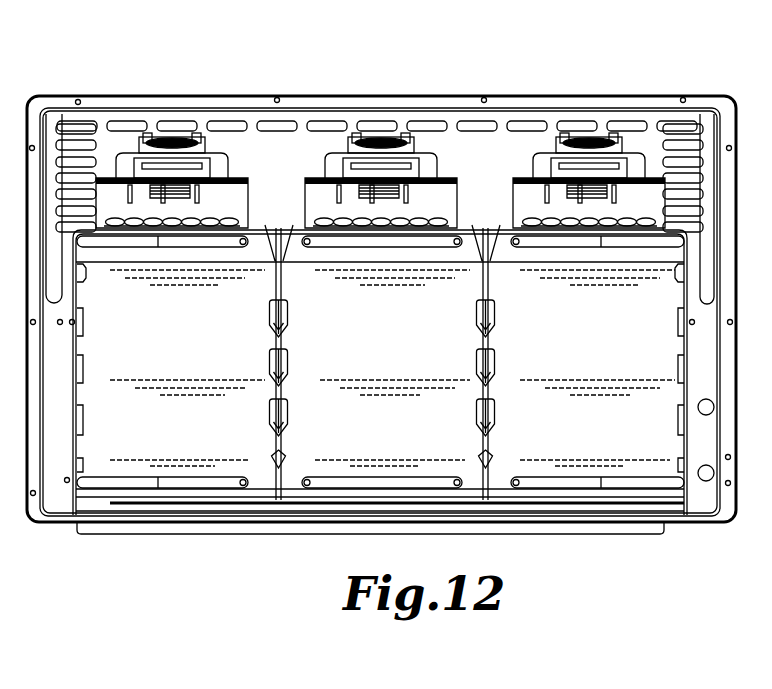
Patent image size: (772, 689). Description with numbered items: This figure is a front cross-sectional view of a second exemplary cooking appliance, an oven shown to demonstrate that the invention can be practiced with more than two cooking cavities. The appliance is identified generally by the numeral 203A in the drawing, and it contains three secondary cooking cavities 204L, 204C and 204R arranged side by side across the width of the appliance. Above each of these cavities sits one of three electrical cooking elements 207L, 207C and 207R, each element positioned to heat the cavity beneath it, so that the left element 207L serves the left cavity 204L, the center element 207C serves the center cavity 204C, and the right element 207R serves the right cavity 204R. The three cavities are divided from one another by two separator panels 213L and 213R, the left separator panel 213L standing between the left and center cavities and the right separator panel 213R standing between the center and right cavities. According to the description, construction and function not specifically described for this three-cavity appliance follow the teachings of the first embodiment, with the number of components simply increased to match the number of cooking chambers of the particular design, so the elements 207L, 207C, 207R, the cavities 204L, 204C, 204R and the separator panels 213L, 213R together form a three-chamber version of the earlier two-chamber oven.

The rack housing 203A is at (673, 90).
The electrical cooking element 207L is at (233, 167).
The electrical cooking element 207C is at (333, 167).
The electrical cooking element 207R is at (599, 167).
The secondary cooking cavity 204L is at (205, 365).
The secondary cooking cavity 204C is at (400, 365).
The secondary cooking cavity 204R is at (605, 365).
The separator panel 213L is at (270, 402).
The separator panel 213R is at (476, 455).